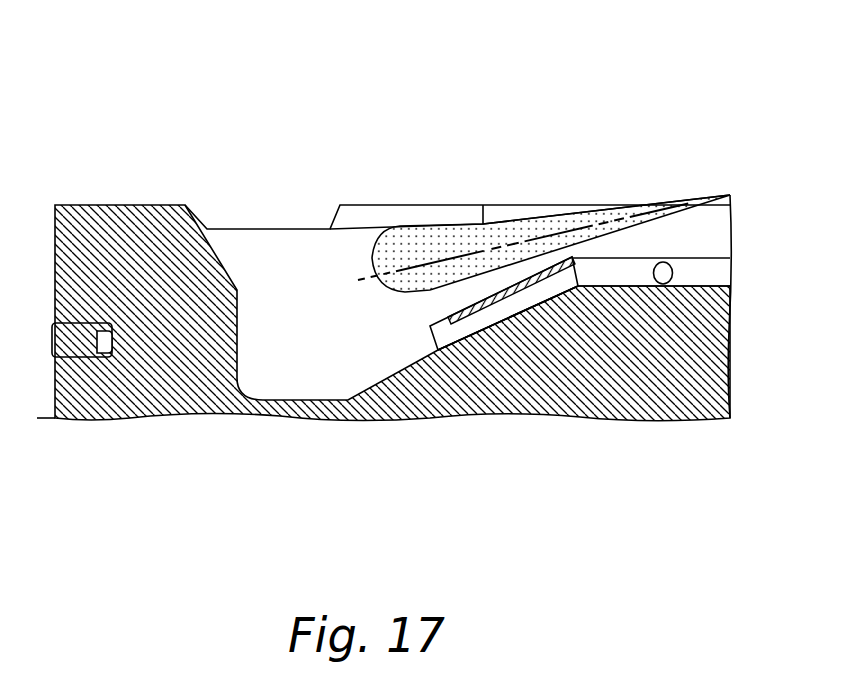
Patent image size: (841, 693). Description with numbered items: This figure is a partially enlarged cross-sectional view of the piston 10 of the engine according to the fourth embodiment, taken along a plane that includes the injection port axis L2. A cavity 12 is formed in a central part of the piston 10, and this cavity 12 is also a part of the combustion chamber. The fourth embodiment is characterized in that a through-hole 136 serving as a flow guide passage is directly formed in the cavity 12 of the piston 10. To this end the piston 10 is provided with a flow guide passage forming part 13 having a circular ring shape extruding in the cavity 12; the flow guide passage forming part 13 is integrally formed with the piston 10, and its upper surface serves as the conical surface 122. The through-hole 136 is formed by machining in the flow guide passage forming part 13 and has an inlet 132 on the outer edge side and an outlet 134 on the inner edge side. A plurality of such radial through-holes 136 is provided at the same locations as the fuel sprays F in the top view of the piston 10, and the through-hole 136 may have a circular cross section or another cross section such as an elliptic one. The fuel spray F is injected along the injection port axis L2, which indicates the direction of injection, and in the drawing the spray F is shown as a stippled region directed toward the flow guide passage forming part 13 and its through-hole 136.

The piston 10 is at (181, 155).
The cavity 12 is at (300, 377).
The flow guide passage forming part 13 is at (637, 273).
The conical surface 122 is at (497, 287).
The inlet 132 is at (430, 340).
The outlet 134 is at (600, 286).
The through-hole 136 is at (508, 305).
The fuel spray F is at (530, 242).
The injection port axis L2 is at (504, 254).